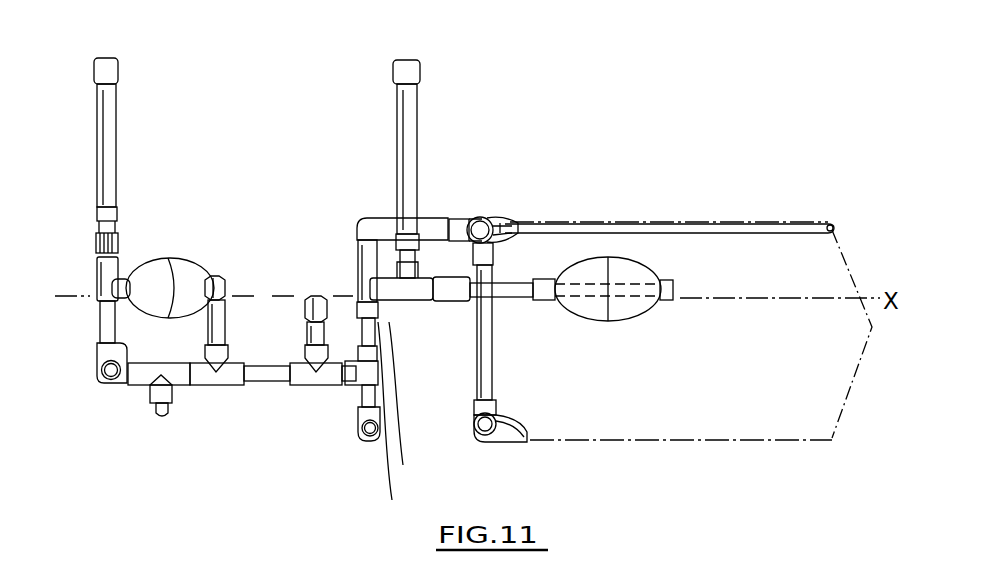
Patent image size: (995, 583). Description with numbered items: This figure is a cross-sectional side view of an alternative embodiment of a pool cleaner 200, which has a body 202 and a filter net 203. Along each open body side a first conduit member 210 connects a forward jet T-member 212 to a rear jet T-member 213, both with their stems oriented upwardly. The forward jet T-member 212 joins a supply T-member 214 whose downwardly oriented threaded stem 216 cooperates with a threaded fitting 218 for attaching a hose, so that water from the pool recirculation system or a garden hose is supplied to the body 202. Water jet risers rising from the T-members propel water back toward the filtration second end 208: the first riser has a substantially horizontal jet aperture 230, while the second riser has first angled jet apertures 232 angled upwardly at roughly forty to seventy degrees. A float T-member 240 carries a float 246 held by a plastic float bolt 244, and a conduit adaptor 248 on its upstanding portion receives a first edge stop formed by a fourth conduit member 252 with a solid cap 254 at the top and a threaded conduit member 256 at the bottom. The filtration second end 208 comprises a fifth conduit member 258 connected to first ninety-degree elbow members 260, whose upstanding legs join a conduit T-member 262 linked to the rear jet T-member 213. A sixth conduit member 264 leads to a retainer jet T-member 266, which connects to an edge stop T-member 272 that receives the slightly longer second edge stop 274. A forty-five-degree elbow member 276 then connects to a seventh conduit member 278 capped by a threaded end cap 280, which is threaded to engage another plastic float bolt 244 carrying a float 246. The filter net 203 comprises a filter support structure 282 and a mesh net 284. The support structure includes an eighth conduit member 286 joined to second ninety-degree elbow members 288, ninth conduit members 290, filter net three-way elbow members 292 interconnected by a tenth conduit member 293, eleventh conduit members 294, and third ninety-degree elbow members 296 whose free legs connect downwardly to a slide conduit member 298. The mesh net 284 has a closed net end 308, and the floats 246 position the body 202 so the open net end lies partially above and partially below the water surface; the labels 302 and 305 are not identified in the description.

The pool cleaner 200 is at (751, 126).
The body 202 is at (74, 390).
The filter net 203 is at (799, 158).
The filtration second end 208 is at (406, 462).
The first conduit member 210 is at (255, 382).
The forward jet T-member 212 is at (218, 386).
The rear jet T-member 213 is at (292, 380).
The supply T-member 214 is at (146, 386).
The threaded stem 216 is at (152, 397).
The threaded fitting 218 is at (161, 417).
The jet aperture 230 is at (222, 286).
The first angled jet apertures 232 is at (308, 310).
The float T-member 240 is at (97, 268).
The plastic float bolt 244 is at (674, 288).
The float 246 is at (152, 262).
The conduit adaptor 248 is at (97, 242).
The fourth conduit member 252 is at (116, 109).
The solid cap 254 is at (112, 63).
The threaded conduit member 256 is at (98, 206).
The fifth conduit member 258 is at (365, 439).
The first 90° elbow members 260 is at (360, 411).
The conduit T-member 262 is at (362, 380).
The sixth conduit member 264 is at (394, 498).
The retainer jet T-member 266 is at (359, 283).
The edge stop T-member 272 is at (421, 296).
The second edge stop 274 is at (400, 97).
The 45° elbow member 276 is at (455, 300).
The seventh conduit member 278 is at (520, 300).
The threaded end cap 280 is at (556, 261).
The filter support structure 282 is at (478, 375).
The mesh net 284 is at (504, 222).
The eighth conduit member 286 is at (499, 421).
The second 90° elbow members 288 is at (495, 402).
The ninth conduit members 290 is at (493, 352).
The filter net three-way elbow members 292 is at (452, 220).
The tenth conduit member 293 is at (486, 219).
The eleventh conduit members 294 is at (455, 222).
The third 90° elbow members 296 is at (375, 221).
The slide conduit member 298 is at (345, 262).
The boom end 302 is at (840, 210).
The boom 305 is at (704, 222).
The closed net end 308 is at (822, 438).